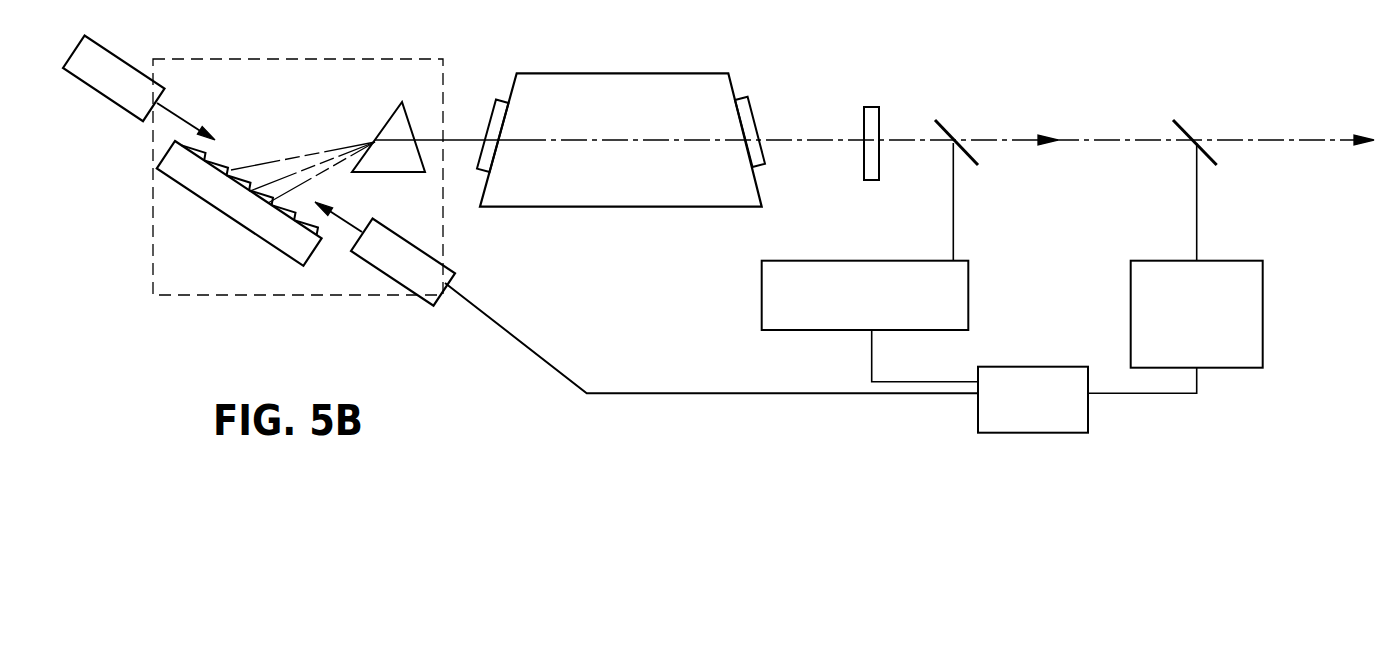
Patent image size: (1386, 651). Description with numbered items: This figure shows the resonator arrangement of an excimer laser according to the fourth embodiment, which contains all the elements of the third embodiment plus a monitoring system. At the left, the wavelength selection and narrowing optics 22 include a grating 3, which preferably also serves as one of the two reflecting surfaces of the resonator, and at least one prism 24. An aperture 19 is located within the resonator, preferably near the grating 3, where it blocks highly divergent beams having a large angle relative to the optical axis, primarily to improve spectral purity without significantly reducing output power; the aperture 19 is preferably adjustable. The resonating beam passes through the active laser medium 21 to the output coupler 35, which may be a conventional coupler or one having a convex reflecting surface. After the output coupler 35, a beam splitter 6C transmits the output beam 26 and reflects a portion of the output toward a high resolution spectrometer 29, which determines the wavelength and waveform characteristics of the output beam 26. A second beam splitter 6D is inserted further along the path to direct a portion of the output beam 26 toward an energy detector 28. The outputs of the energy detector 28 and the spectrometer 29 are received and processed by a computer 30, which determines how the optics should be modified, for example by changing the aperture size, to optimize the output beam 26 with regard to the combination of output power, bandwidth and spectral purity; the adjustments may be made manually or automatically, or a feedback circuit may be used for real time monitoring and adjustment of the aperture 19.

The aperture 19 is at (98, 88).
The wavelength selection and narrowing optics 22 is at (275, 96).
The grating 3 is at (259, 240).
The prism 24 is at (375, 168).
The active laser medium 21 is at (603, 190).
The output coupler 35 is at (872, 107).
The beam splitter 6C is at (956, 178).
The second beam splitter 6D is at (1195, 178).
The output beam 26 is at (874, 121).
The high resolution spectrometer 29 is at (877, 310).
The energy detector 28 is at (1183, 326).
The computer 30 is at (1018, 413).